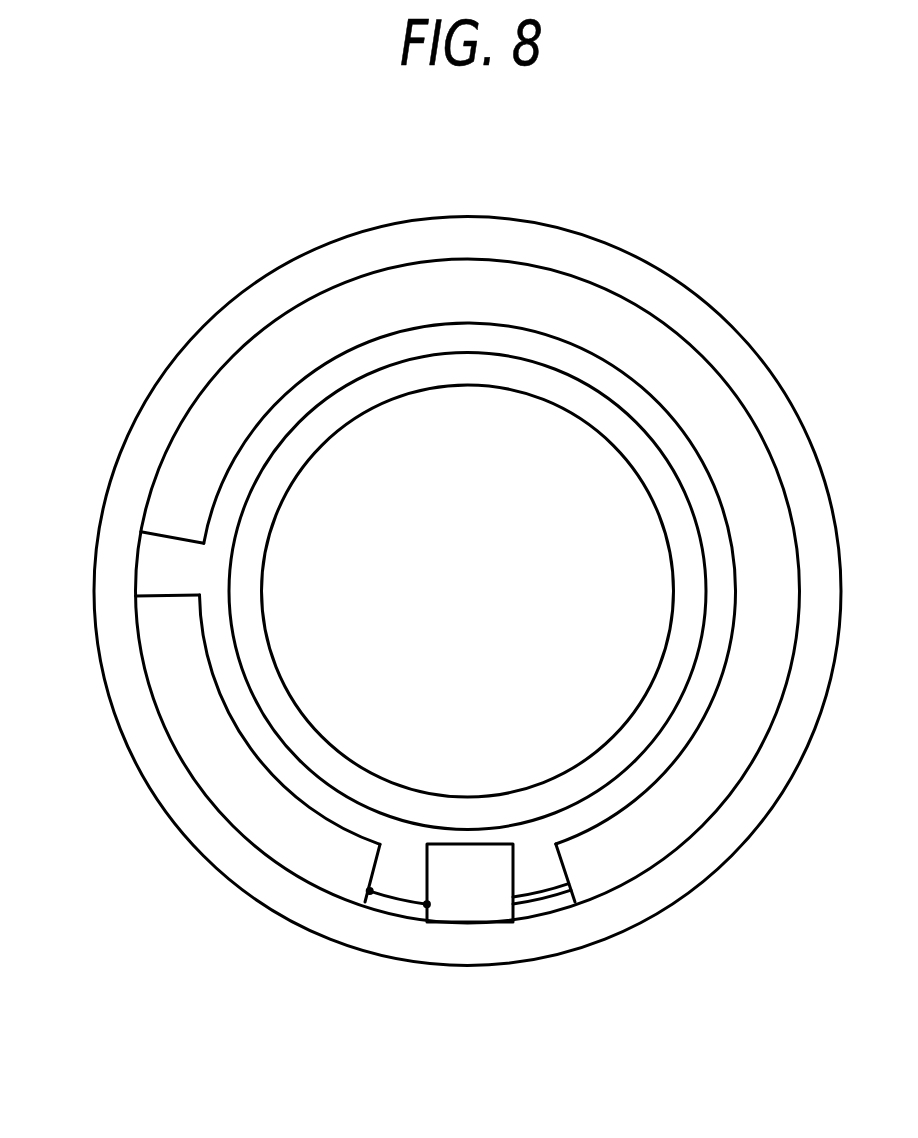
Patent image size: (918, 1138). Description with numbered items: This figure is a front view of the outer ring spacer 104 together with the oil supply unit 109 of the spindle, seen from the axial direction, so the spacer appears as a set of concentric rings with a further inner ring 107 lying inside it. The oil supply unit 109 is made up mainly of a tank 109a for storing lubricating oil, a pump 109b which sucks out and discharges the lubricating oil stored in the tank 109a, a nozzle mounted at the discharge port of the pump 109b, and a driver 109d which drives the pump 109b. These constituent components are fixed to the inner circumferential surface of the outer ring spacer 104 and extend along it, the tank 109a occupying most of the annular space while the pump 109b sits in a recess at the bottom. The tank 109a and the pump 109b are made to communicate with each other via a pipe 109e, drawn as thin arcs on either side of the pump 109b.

The outer ring spacer 104 is at (245, 317).
The lens 107 is at (320, 425).
The oil supply unit 109 is at (416, 643).
The tank 109a is at (662, 365).
The pump 109b is at (469, 887).
The driver 109d is at (205, 743).
The pipe 109e is at (318, 797).